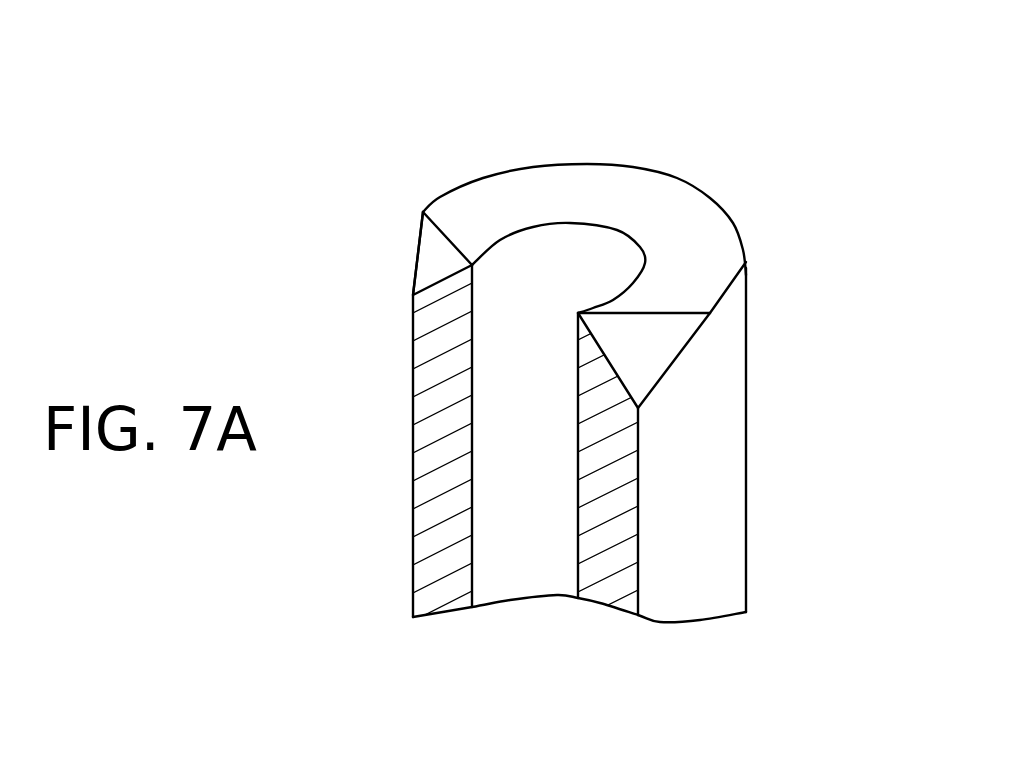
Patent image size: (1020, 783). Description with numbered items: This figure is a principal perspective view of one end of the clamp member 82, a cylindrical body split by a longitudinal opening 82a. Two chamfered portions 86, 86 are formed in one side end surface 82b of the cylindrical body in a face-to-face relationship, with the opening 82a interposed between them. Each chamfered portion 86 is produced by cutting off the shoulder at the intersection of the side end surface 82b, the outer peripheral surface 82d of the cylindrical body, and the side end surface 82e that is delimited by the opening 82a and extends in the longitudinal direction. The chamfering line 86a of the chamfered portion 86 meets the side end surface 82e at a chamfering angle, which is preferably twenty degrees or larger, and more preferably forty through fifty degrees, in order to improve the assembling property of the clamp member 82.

The clamp member 82 is at (615, 150).
The opening 82a is at (535, 583).
The one side end surface 82b is at (695, 210).
The outer peripheral surface 82d is at (708, 467).
The side end surface 82e is at (615, 540).
The chamfered portion 86 is at (425, 262).
The chamfering line 86a is at (663, 312).